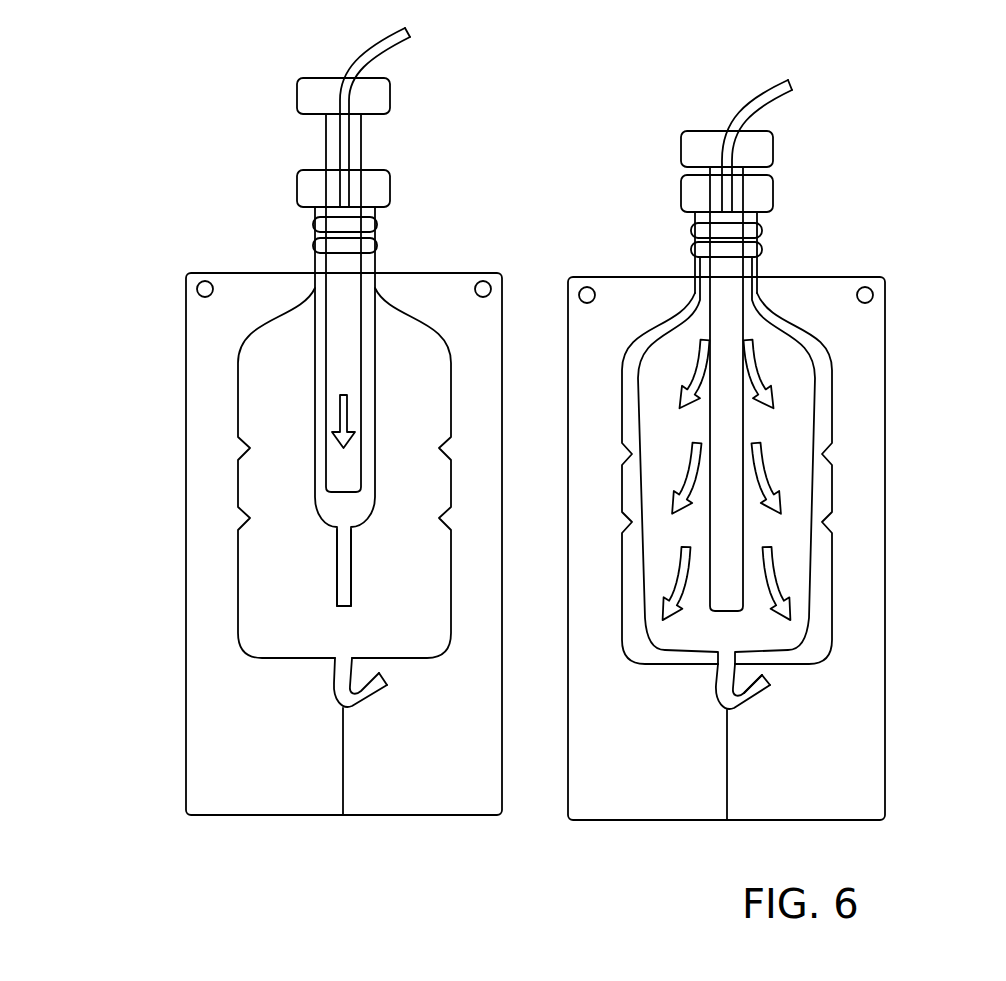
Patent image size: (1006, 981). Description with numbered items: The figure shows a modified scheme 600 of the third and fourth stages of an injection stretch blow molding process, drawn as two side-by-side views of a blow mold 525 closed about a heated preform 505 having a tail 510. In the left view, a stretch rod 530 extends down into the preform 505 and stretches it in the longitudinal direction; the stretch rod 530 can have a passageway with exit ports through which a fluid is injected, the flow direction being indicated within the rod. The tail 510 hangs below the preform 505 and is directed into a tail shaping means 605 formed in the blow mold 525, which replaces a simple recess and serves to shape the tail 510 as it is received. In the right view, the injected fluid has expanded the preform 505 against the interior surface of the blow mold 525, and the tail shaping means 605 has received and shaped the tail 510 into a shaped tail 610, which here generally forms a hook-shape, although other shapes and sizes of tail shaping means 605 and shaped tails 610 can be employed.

The modified scheme 600 is at (537, 455).
The preform 505 is at (315, 377).
The stretch rod 530 is at (333, 409).
The tail 510 is at (335, 567).
The tail shaping means 605 is at (327, 692).
The shaped tail 610 is at (760, 693).
The blow mold 525 is at (186, 735).